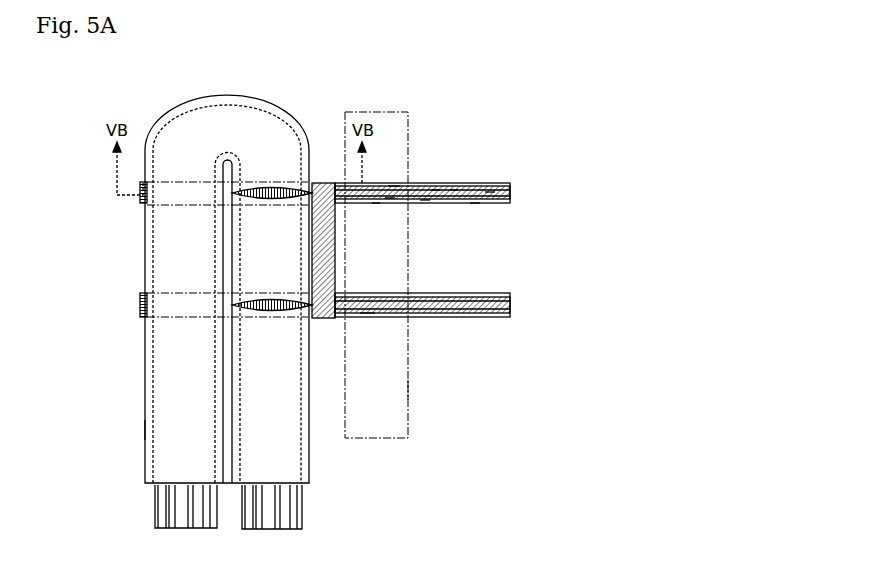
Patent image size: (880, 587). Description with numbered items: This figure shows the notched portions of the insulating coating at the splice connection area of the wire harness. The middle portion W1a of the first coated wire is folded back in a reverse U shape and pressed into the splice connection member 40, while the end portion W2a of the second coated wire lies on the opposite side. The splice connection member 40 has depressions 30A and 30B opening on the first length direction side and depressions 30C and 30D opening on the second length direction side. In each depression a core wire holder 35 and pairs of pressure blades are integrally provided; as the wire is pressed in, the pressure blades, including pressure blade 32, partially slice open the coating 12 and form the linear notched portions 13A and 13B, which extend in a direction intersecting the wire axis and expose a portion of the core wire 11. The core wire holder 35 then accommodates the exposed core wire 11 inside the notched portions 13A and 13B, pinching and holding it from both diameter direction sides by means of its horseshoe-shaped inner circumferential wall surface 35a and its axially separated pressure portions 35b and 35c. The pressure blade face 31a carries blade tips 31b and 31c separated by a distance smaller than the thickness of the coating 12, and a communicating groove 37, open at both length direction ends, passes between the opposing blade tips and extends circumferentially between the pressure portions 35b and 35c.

The core wire 11 is at (300, 505).
The coating 12 is at (310, 448).
The notched portion 13A is at (242, 195).
The notched portion 13B is at (242, 307).
The depression 30A is at (142, 205).
The depression 30B is at (142, 318).
The depression 30C is at (513, 182).
The depression 30D is at (513, 291).
The pressure blade face 31a is at (420, 200).
The blade tip 31b is at (485, 192).
The blade tip 31c is at (470, 203).
The pressure blade 32 is at (450, 190).
The core wire holder 35 is at (368, 324).
The inner circumferential wall surface 35a is at (372, 205).
The pressure portion 35b is at (385, 199).
The pressure portion 35c is at (388, 188).
The communicating groove 37 is at (432, 190).
The splice connection member 40 is at (320, 182).
The middle portion W1a is at (147, 428).
The end portion W2a is at (413, 389).